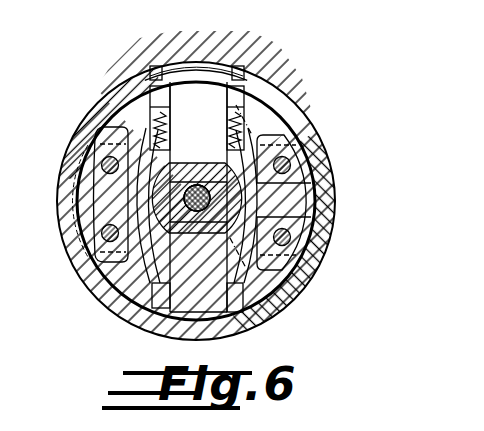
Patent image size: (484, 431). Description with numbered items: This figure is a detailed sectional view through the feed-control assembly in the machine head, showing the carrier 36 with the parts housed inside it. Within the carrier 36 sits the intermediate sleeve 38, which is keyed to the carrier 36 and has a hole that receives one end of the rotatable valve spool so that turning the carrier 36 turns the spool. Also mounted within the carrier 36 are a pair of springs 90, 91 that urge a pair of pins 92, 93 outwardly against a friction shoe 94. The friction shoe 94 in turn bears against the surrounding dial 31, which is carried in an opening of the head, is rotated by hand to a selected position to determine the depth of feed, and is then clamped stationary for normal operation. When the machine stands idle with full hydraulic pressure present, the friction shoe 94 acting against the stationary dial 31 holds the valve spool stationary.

The dial 31 is at (196, 179).
The friction shoe 94 is at (212, 62).
The pin 92 is at (262, 82).
The spring 90 is at (287, 112).
The carrier 36 is at (238, 162).
The pin 93 is at (157, 108).
The spring 91 is at (150, 131).
The intermediate sleeve 38 is at (209, 250).